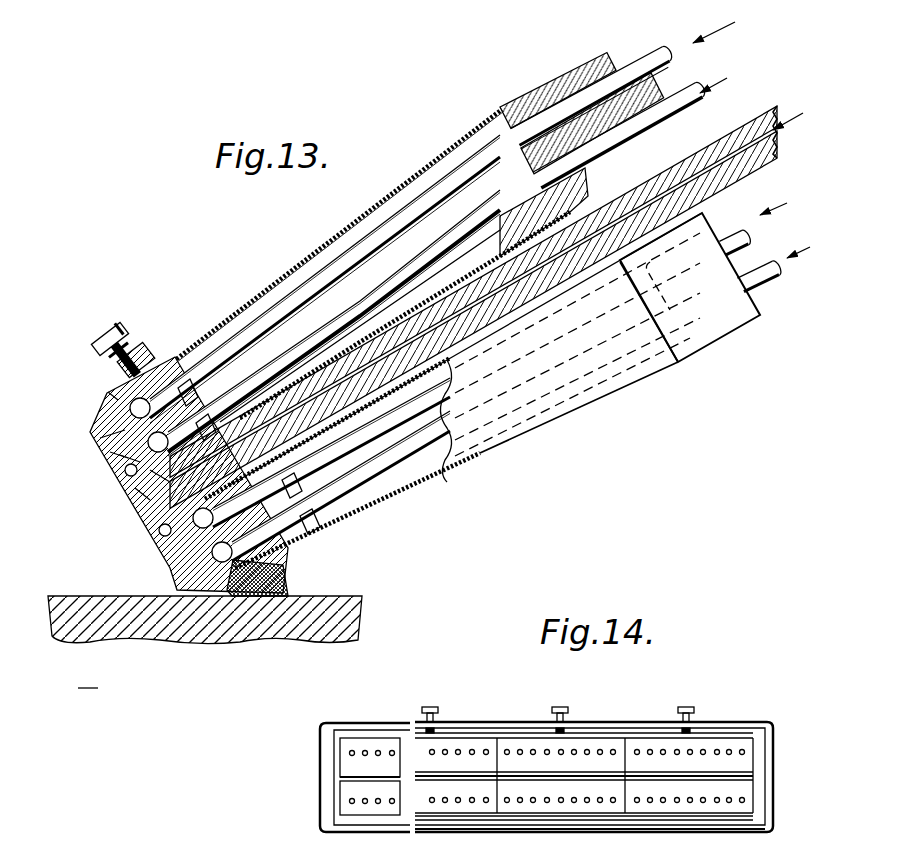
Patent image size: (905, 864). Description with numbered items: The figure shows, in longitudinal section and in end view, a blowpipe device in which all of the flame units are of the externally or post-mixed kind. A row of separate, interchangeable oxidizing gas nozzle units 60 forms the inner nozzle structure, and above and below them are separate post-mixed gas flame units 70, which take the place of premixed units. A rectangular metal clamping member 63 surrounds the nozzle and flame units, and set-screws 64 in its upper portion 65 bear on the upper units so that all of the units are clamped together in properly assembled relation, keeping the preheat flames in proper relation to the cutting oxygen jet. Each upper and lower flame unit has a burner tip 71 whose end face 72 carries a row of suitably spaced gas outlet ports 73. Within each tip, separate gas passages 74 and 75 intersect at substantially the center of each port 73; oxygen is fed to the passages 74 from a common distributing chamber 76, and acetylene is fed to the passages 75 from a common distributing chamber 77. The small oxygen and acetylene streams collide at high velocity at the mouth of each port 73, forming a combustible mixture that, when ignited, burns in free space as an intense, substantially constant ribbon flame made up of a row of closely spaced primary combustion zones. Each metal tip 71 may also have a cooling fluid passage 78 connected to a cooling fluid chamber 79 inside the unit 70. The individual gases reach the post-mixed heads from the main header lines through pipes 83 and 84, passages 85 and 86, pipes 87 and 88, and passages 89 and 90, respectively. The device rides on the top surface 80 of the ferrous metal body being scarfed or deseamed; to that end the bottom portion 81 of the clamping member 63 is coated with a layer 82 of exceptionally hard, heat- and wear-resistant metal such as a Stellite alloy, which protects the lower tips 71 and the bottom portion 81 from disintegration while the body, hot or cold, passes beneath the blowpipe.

In FIG. 13, the oxidizing gas nozzle unit 60 is at (150, 490).
In FIG. 14, the oxidizing gas nozzle unit 60 is at (464, 772).
In FIG. 13, the rectangular metal clamping member 63 is at (140, 340).
In FIG. 13, the set-screw 64 is at (105, 325).
In FIG. 14, the set-screw 64 is at (430, 707).
In FIG. 13, the upper portion of clamping member 65 is at (104, 358).
In FIG. 14, the upper portion of clamping member 65 is at (648, 722).
In FIG. 13, the post-mixed gas flame unit 70 is at (320, 235).
In FIG. 13, the burner tip 71 is at (105, 420).
In FIG. 14, the burner tip 71 is at (362, 738).
In FIG. 13, the end face 72 is at (100, 438).
In FIG. 14, the end face 72 is at (490, 750).
In FIG. 13, the gas outlet port 73 is at (130, 456).
In FIG. 14, the gas outlet port 73 is at (392, 750).
In FIG. 13, the oxygen gas passage 74 is at (115, 455).
In FIG. 13, the acetylene gas passage 75 is at (125, 471).
In FIG. 13, the oxygen distributing chamber 76 is at (112, 397).
In FIG. 13, the acetylene distributing chamber 77 is at (160, 470).
In FIG. 13, the cooling fluid passage 78 is at (140, 490).
In FIG. 13, the cooling fluid chamber 79 is at (278, 295).
In FIG. 13, the top surface of metal body 80 is at (88, 596).
In FIG. 13, the bottom portion of clamping member 81 is at (283, 570).
In FIG. 14, the bottom portion of clamping member 81 is at (632, 824).
In FIG. 13, the hard metal layer 82 is at (262, 598).
In FIG. 13, the pipe 83 is at (620, 42).
In FIG. 13, the pipe 84 is at (678, 100).
In FIG. 13, the gas passage 85 is at (540, 105).
In FIG. 13, the gas passage 86 is at (575, 100).
In FIG. 13, the pipe 87 is at (437, 190).
In FIG. 13, the pipe 88 is at (500, 165).
In FIG. 13, the gas passage 89 is at (200, 372).
In FIG. 13, the gas passage 90 is at (205, 380).